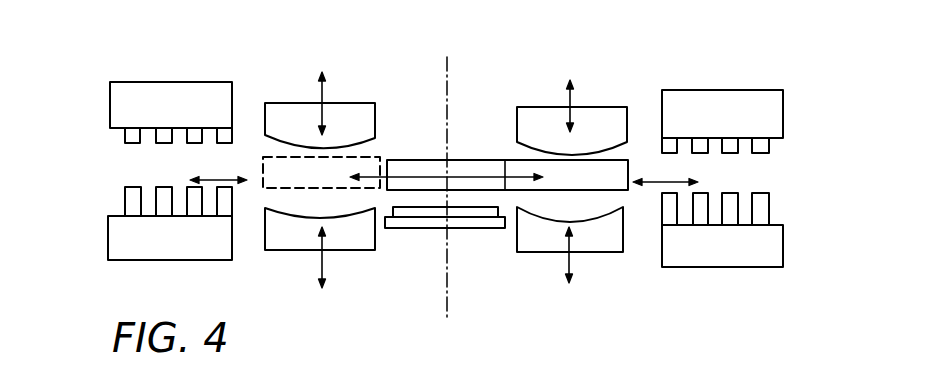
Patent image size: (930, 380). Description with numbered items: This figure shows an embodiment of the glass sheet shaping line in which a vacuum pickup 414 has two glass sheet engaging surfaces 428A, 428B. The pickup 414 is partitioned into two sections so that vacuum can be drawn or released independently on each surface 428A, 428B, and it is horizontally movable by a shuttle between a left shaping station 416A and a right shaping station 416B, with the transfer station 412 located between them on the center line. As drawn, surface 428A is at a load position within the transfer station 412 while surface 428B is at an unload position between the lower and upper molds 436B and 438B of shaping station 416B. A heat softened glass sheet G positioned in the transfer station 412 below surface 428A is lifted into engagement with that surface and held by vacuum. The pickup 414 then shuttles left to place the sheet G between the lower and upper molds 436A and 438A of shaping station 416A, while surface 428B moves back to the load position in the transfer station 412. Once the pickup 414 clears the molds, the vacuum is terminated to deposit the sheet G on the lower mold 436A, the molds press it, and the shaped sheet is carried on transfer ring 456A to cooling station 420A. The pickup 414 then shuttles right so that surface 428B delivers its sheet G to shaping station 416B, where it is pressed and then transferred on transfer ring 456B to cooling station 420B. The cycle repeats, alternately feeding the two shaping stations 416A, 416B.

The transfer station 412 is at (463, 50).
The vacuum pickup 414 is at (415, 160).
The shaping station 416A is at (352, 50).
The shaping station 416B is at (605, 50).
The cooling station 420A is at (205, 47).
The cooling station 420B is at (758, 55).
The glass sheet engaging surface 428A is at (428, 191).
The glass sheet engaging surface 428B is at (562, 192).
The lower mold 436A is at (300, 251).
The lower mold 436B is at (588, 252).
The upper mold 438A is at (373, 87).
The upper mold 438B is at (543, 105).
The transfer ring 456A is at (235, 165).
The transfer ring 456B is at (665, 170).
The glass sheet G is at (468, 207).